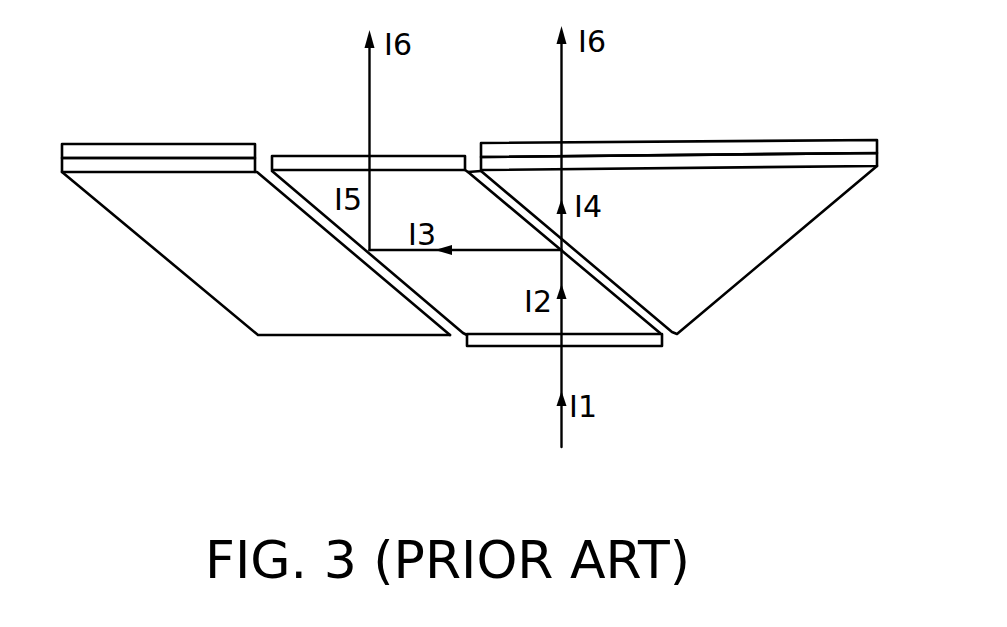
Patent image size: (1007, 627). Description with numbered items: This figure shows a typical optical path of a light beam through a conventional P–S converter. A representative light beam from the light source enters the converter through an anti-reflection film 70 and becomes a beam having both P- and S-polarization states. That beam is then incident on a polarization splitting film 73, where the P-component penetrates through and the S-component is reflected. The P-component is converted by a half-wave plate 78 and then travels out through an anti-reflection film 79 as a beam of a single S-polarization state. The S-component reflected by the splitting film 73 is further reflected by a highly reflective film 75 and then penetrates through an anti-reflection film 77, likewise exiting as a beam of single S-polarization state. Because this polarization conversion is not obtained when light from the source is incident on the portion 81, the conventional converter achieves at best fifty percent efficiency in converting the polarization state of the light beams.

The anti-reflection film 70 is at (512, 339).
The polarization splitting film 73 is at (475, 162).
The highly reflective film 75 is at (322, 226).
The anti-reflection film 77 is at (303, 163).
The half-wave plate 78 is at (192, 165).
The anti-reflection film 79 is at (98, 152).
The portion 81 is at (307, 338).